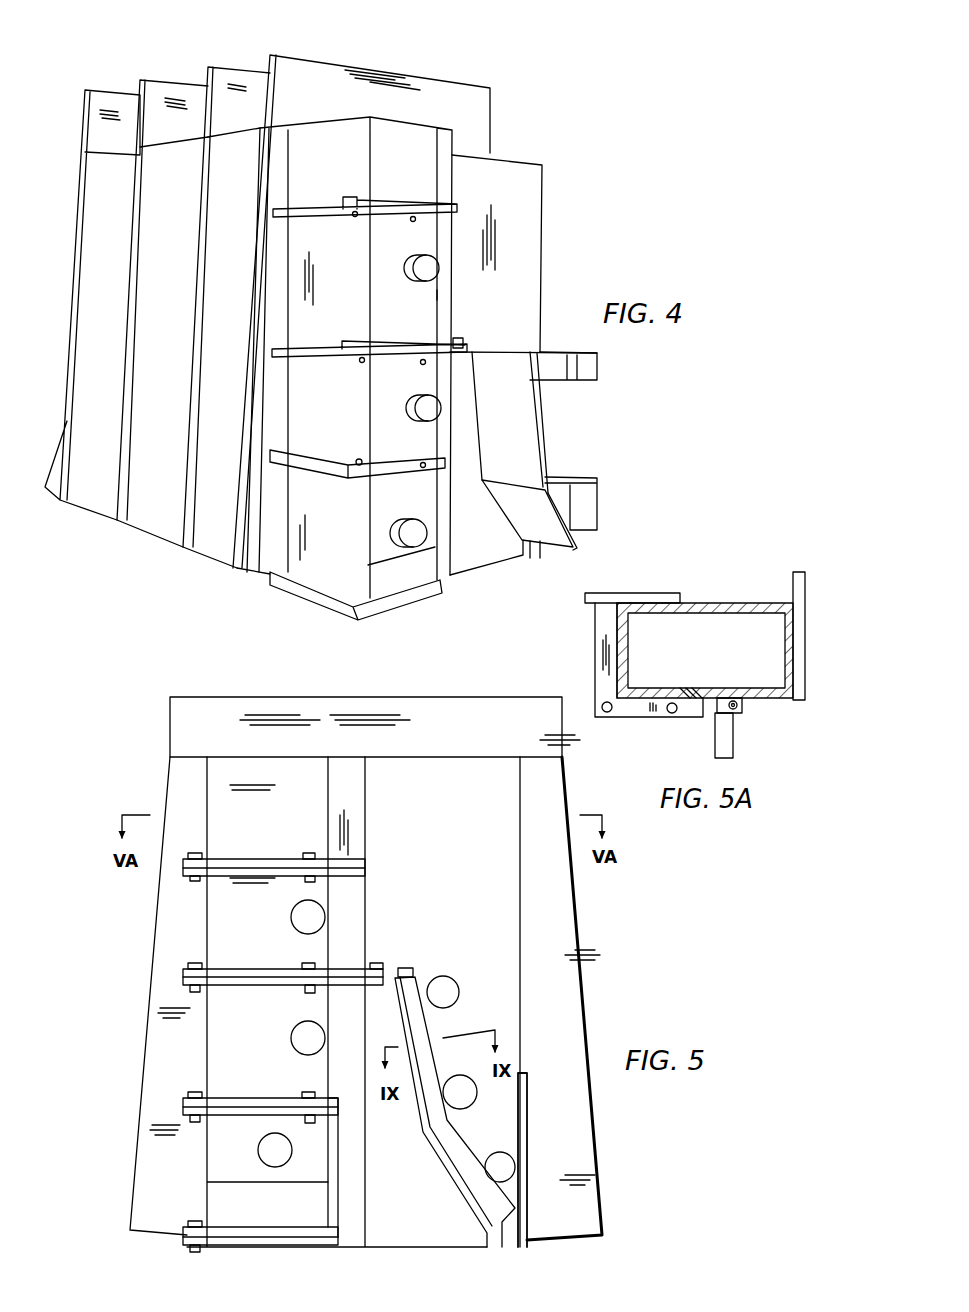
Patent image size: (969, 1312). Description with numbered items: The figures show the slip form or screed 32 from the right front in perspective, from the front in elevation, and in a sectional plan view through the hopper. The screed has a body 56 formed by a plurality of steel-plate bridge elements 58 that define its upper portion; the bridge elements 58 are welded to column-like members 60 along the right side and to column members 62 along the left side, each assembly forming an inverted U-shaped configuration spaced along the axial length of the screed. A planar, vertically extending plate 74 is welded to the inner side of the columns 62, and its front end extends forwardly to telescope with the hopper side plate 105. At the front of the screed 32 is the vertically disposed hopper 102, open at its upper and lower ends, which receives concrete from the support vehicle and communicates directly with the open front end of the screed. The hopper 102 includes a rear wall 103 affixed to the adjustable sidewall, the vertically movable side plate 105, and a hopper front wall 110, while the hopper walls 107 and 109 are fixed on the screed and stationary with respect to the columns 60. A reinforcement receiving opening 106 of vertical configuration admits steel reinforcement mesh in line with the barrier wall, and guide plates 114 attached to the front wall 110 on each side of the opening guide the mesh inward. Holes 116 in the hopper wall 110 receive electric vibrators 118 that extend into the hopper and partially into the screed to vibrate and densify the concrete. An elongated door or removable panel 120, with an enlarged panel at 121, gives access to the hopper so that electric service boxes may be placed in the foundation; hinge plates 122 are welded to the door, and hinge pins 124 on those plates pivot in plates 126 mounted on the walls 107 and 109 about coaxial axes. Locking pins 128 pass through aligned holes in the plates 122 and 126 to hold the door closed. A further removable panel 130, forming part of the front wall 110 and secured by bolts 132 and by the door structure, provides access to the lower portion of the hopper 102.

In FIG. 4, the slip form 32 is at (122, 565).
In FIG. 5, the slip form 32 is at (100, 944).
In FIG. 4, the body 56 is at (478, 106).
In FIG. 4, the bridge element 58 is at (377, 80).
In FIG. 5, the bridge element 58 is at (432, 708).
In FIG. 4, the column-like member 60 is at (207, 398).
In FIG. 5, the column-like member 60 is at (163, 893).
In FIG. 5, the column member 62 is at (567, 937).
In FIG. 5A, the vertically extending plate 74 is at (807, 668).
In FIG. 5, the vertically extending plate 74 is at (527, 1138).
In FIG. 4, the hopper 102 is at (545, 210).
In FIG. 5, the hopper 102 is at (462, 883).
In FIG. 5A, the rear wall 103 is at (727, 603).
In FIG. 5A, the hopper side plate 105 is at (787, 634).
In FIG. 5, the reinforcement receiving opening 106 is at (423, 1035).
In FIG. 4, the hopper wall 107 is at (338, 258).
In FIG. 5A, the hopper wall 107 is at (626, 638).
In FIG. 4, the hopper wall 109 is at (420, 160).
In FIG. 5A, the hopper wall 109 is at (643, 693).
In FIG. 4, the hopper front wall 110 is at (530, 273).
In FIG. 5A, the hopper front wall 110 is at (740, 688).
In FIG. 5, the hopper front wall 110 is at (510, 898).
In FIG. 4, the guide plate 114 is at (587, 483).
In FIG. 5, the guide plate 114 is at (427, 977).
In FIG. 4, the hole 116 is at (412, 262).
In FIG. 5, the hole 116 is at (460, 993).
In FIG. 4, the electric vibrator 118 is at (417, 397).
In FIG. 5, the electric vibrator 118 is at (292, 915).
In FIG. 4, the door 120 is at (442, 293).
In FIG. 5A, the door 120 is at (687, 688).
In FIG. 5, the door 120 is at (358, 880).
In FIG. 5, the enlarged panel 121 is at (260, 1213).
In FIG. 4, the hinge plate 122 is at (393, 342).
In FIG. 5, the hinge plate 122 is at (243, 857).
In FIG. 4, the hinge pin 124 is at (357, 197).
In FIG. 5A, the hinge pin 124 is at (610, 718).
In FIG. 5, the hinge pin 124 is at (198, 853).
In FIG. 4, the plate 126 is at (313, 356).
In FIG. 5A, the plate 126 is at (597, 633).
In FIG. 5, the plate 126 is at (237, 987).
In FIG. 4, the locking pin 128 is at (422, 457).
In FIG. 5A, the locking pin 128 is at (670, 718).
In FIG. 5, the locking pin 128 is at (307, 853).
In FIG. 4, the removable panel 130 is at (488, 520).
In FIG. 5, the removable panel 130 is at (425, 1210).
In FIG. 4, the bolt 132 is at (462, 341).
In FIG. 5, the bolt 132 is at (380, 960).